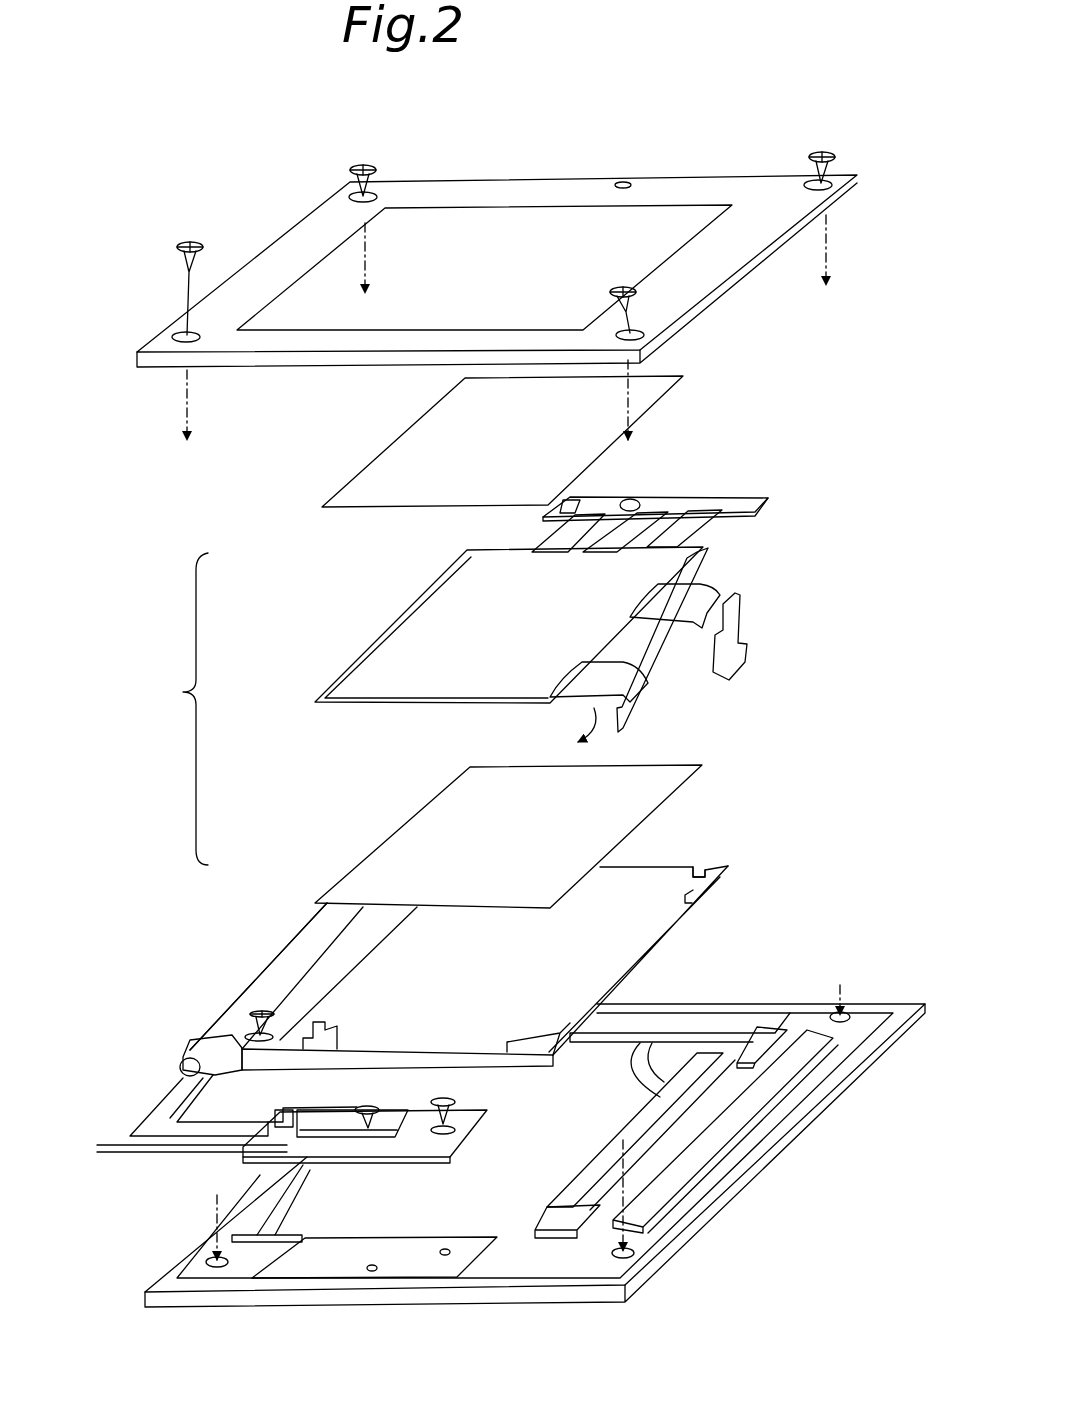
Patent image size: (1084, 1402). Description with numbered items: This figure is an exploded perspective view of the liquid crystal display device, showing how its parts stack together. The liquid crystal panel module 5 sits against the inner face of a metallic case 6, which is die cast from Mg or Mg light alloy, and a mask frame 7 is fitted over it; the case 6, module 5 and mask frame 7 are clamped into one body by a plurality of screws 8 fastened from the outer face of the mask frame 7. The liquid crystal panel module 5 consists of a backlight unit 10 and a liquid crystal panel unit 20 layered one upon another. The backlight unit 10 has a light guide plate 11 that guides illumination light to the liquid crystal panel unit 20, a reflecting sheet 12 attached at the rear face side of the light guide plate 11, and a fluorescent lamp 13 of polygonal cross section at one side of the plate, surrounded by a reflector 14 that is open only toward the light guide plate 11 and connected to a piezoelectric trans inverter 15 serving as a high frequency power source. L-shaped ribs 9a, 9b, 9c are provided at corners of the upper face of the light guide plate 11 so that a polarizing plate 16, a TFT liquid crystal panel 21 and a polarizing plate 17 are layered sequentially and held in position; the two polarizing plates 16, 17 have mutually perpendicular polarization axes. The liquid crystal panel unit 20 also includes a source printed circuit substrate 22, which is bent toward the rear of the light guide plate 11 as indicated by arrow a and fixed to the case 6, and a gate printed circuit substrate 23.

The liquid crystal panel module 5 is at (489, 685).
The metallic case 6 is at (483, 1293).
The mask frame 7 is at (315, 215).
The screws 8 is at (368, 168).
The L-shaped rib 9a is at (333, 1024).
The L-shaped rib 9b is at (533, 1037).
The L-shaped rib 9c is at (715, 866).
The backlight unit 10 is at (297, 913).
The light guide plate 11 is at (450, 1048).
The reflecting sheet 12 is at (642, 975).
The fluorescent lamp 13 is at (183, 1067).
The reflector 14 is at (243, 988).
The piezoelectric trans inverter 15 is at (253, 1160).
The polarizing plate 16 is at (695, 778).
The polarizing plate 17 is at (670, 393).
The liquid crystal panel unit 20 is at (505, 612).
The TFT liquid crystal panel 21 is at (425, 593).
The source printed circuit substrate 22 is at (733, 593).
The gate printed circuit substrate 23 is at (712, 495).